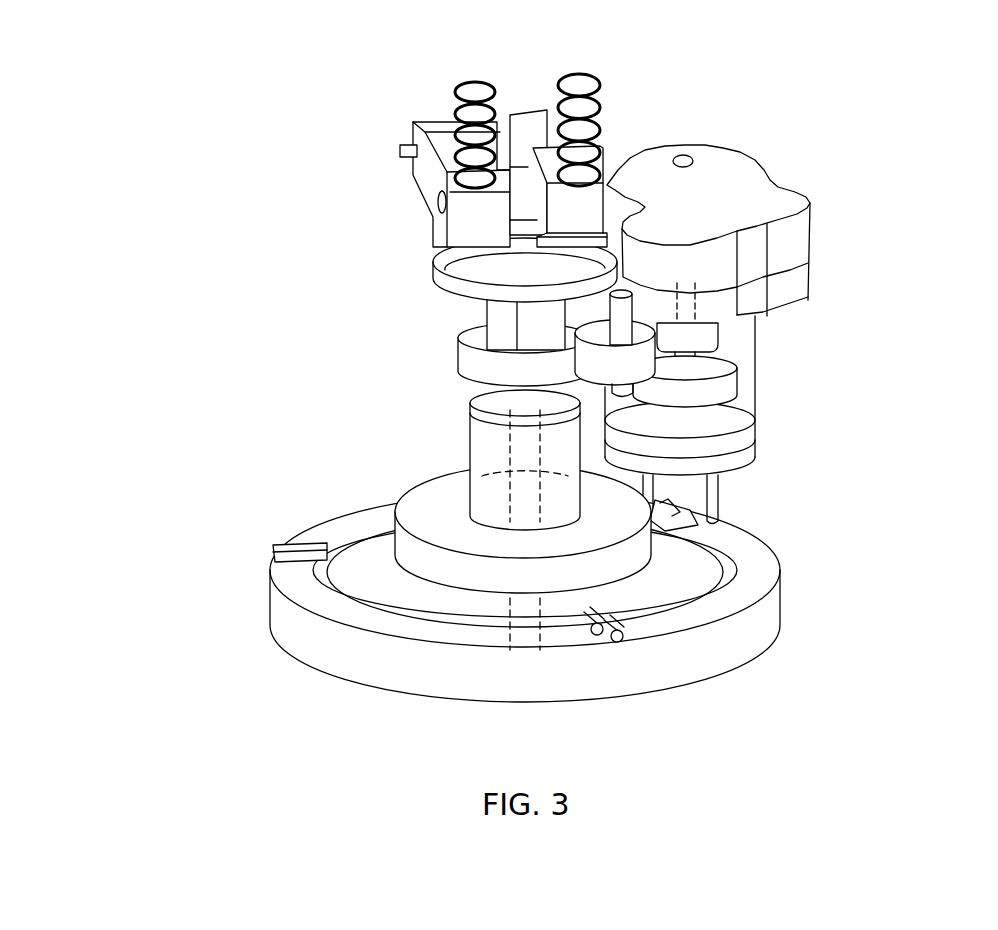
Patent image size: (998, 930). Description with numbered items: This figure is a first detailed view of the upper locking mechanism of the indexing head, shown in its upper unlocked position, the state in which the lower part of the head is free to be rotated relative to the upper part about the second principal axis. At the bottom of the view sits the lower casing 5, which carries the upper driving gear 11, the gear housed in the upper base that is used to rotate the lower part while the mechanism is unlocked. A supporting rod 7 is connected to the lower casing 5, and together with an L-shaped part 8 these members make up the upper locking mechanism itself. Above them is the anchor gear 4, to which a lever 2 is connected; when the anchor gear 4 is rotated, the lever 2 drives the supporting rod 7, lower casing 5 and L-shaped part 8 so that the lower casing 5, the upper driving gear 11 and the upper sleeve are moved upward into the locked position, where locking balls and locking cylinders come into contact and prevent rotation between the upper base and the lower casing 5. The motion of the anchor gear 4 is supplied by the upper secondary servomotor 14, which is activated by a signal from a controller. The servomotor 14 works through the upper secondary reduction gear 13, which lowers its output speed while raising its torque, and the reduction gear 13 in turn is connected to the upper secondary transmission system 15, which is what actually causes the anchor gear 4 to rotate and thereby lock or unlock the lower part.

The lever 2 is at (500, 287).
The anchor gear 4 is at (460, 361).
The lower casing 5 is at (742, 571).
The supporting rod 7 is at (528, 202).
The L-shaped part 8 is at (585, 207).
The upper driving gear 11 is at (437, 562).
The upper secondary reduction gear 13 is at (742, 196).
The upper secondary servomotor 14 is at (742, 342).
The upper secondary transmission system 15 is at (620, 377).